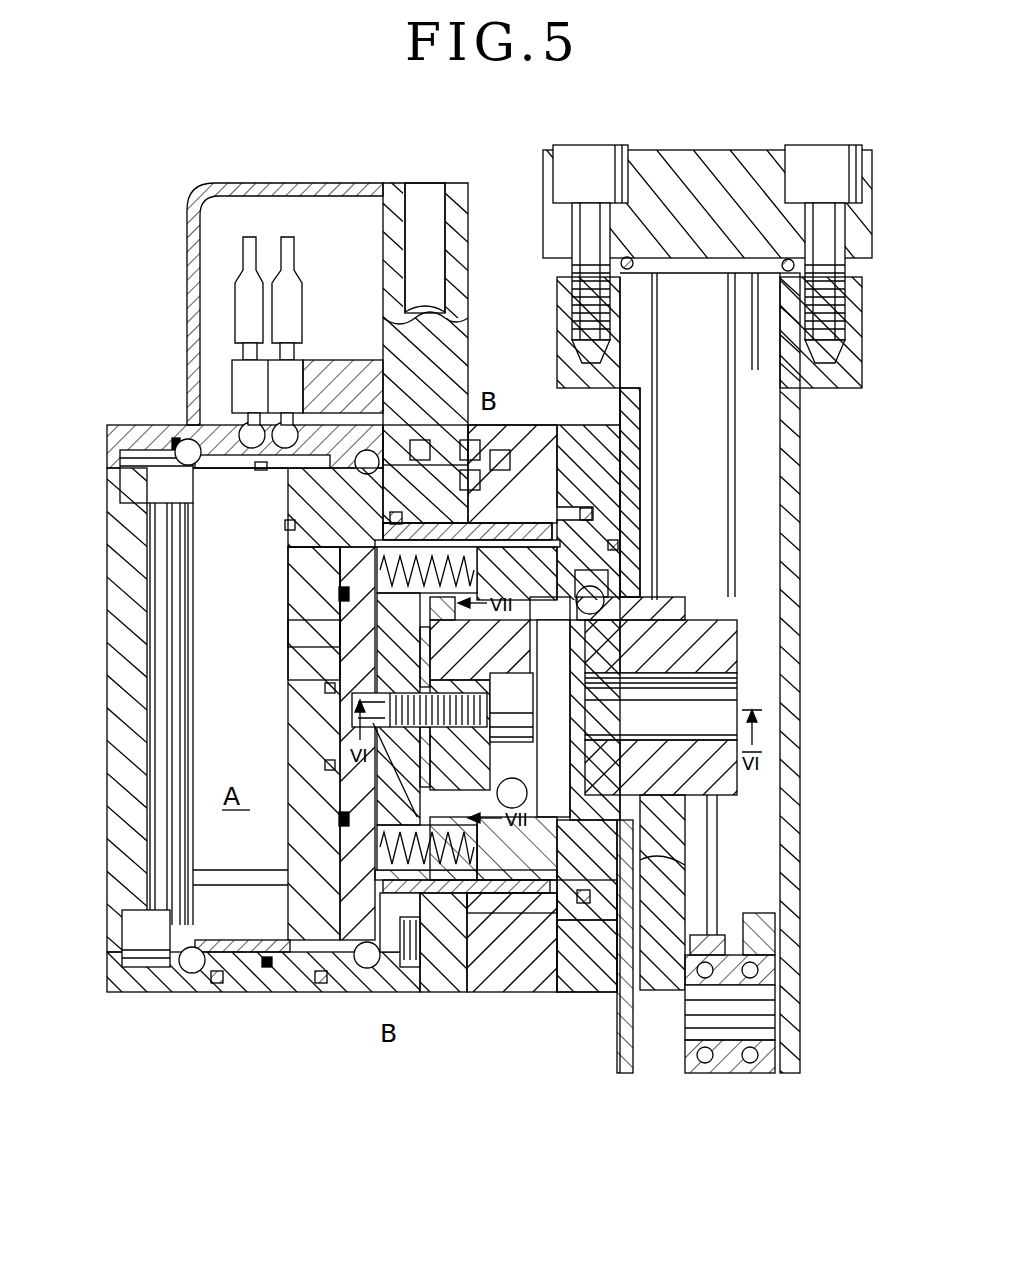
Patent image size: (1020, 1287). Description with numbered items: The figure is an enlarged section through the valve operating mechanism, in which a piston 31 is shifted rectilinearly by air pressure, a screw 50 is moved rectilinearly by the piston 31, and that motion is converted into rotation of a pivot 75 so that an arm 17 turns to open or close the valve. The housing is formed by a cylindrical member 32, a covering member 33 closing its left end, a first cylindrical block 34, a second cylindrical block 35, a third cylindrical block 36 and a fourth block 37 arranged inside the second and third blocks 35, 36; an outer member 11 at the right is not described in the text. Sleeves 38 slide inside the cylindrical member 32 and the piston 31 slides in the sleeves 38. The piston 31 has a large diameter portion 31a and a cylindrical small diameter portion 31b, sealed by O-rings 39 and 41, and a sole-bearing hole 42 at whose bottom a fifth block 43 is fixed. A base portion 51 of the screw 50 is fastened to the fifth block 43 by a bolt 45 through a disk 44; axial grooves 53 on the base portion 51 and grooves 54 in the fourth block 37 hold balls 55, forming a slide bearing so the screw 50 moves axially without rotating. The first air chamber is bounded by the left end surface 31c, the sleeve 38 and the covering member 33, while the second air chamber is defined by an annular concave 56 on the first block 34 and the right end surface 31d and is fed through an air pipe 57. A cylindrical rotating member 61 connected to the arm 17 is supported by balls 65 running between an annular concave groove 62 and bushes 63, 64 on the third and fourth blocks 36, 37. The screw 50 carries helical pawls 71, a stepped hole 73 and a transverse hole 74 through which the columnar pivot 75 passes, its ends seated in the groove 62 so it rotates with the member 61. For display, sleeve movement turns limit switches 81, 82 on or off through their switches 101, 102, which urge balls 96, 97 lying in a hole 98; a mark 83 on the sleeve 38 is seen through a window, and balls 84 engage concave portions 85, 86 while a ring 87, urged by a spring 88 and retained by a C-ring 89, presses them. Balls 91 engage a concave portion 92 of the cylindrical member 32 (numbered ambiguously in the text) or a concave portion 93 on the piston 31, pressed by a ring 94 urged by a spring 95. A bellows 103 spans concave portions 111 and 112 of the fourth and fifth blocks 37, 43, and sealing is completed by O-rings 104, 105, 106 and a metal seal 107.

The housing 11 is at (800, 808).
The arm 17 is at (700, 880).
The piston 31 is at (280, 740).
The large diameter portion 31a is at (310, 645).
The small diameter portion 31b is at (560, 470).
The left end surface 31c is at (300, 580).
The right end surface 31d is at (439, 522).
The cylindrical member 32 is at (192, 973).
The covering member 33 is at (115, 765).
The first cylindrical block 34 is at (425, 960).
The second cylindrical block 35 is at (490, 950).
The third cylindrical block 36 is at (590, 960).
The fourth block 37 is at (550, 900).
The sleeves 38 is at (235, 940).
The O-ring 39 is at (365, 968).
The O-ring 41 is at (320, 880).
The sole-bearing hole 42 is at (330, 690).
The fifth block 43 is at (330, 765).
The disk 44 is at (410, 640).
The bolt 45 is at (350, 712).
The screw 50 is at (768, 667).
The base portion 51 is at (520, 600).
The grooves 53 is at (511, 707).
The grooves 54 is at (470, 730).
The balls 55 is at (505, 790).
The annular concave 56 is at (470, 480).
The air pipe 57 is at (430, 200).
The cylindrical rotating member 61 is at (660, 600).
The annular concave groove 62 is at (553, 630).
The bush 63 is at (630, 520).
The bush 64 is at (618, 545).
The balls 65 is at (598, 583).
The pawls 71 is at (710, 652).
The stepped hole 73 is at (700, 790).
The hole 74 is at (530, 638).
The pivot 75 is at (570, 720).
The limit switch 81 is at (245, 290).
The limit switch 82 is at (285, 290).
The mark 83 is at (270, 975).
The balls 84 is at (393, 425).
The concave portion 85 is at (355, 470).
The concave portion 86 is at (350, 420).
The ring 87 is at (420, 450).
The spring 88 is at (500, 460).
The C-ring 89 is at (470, 450).
The balls 91 is at (150, 458).
The seal 92 is at (175, 445).
The concave portion 93 is at (290, 530).
The ring 94 is at (170, 482).
The spring 95 is at (150, 475).
The ball 96 is at (250, 430).
The ball 97 is at (262, 470).
The hole 98 is at (240, 420).
The switch 101 is at (235, 375).
The switch 102 is at (290, 365).
The bellows 103 is at (420, 930).
The O-rings 104 is at (216, 983).
The O-ring 105 is at (150, 980).
The O-ring 106 is at (340, 595).
The metal seal 107 is at (592, 510).
The concave portion 111 is at (383, 770).
The concave portion 112 is at (512, 927).